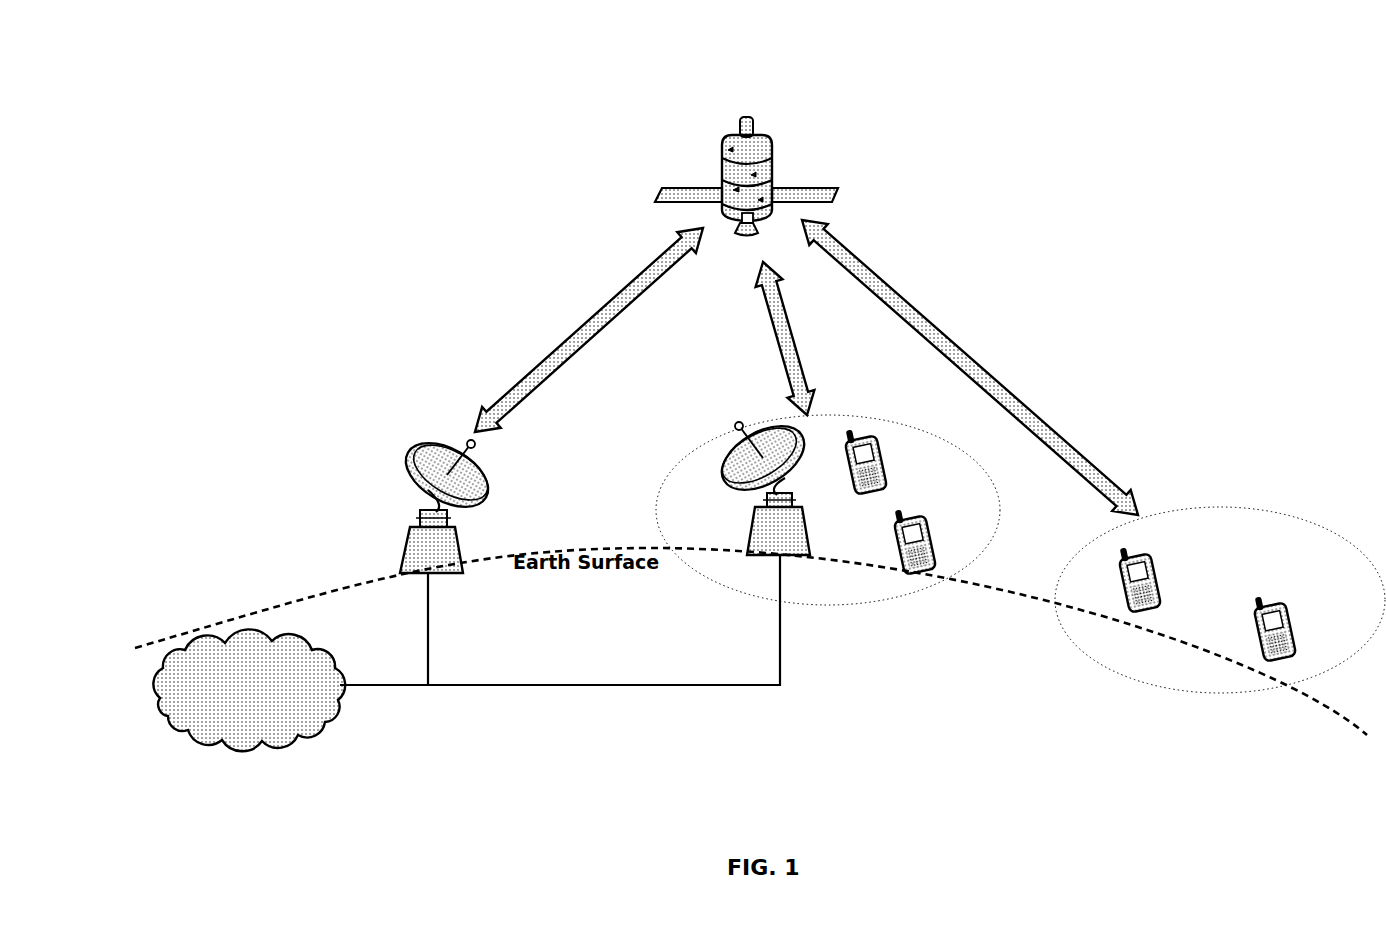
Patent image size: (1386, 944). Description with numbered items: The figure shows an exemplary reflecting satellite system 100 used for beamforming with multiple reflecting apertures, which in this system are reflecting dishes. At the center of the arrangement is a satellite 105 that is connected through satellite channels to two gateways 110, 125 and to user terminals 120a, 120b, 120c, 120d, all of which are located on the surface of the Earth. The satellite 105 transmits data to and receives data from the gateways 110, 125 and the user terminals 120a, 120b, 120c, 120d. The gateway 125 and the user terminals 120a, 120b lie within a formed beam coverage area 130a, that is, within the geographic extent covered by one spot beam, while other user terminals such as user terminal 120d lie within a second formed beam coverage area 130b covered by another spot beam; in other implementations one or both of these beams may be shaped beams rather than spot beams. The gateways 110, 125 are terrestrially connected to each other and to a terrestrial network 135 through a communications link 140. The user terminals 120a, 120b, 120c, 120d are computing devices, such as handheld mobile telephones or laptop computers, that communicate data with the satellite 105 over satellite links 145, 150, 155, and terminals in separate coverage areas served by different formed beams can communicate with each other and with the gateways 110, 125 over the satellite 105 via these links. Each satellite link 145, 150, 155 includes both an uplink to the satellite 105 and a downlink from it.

The reflecting satellite system 100 is at (218, 90).
The satellite 105 is at (722, 150).
The gateway 110 is at (413, 487).
The user terminal 120a is at (887, 460).
The user terminal 120b is at (935, 552).
The user terminal 120c is at (1162, 588).
The user terminal 120d is at (1340, 637).
The gateway 125 is at (752, 520).
The formed beam coverage area 130a is at (825, 605).
The formed beam coverage area 130b is at (1223, 692).
The terrestrial network 135 is at (157, 700).
The communications link 140 is at (595, 687).
The satellite link 145 is at (578, 352).
The satellite link 150 is at (797, 348).
The satellite link 155 is at (1040, 377).